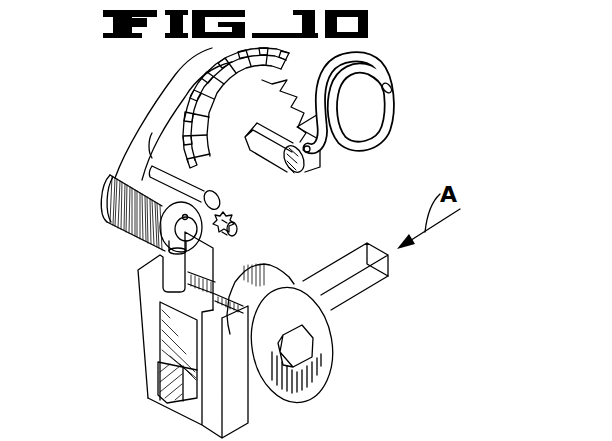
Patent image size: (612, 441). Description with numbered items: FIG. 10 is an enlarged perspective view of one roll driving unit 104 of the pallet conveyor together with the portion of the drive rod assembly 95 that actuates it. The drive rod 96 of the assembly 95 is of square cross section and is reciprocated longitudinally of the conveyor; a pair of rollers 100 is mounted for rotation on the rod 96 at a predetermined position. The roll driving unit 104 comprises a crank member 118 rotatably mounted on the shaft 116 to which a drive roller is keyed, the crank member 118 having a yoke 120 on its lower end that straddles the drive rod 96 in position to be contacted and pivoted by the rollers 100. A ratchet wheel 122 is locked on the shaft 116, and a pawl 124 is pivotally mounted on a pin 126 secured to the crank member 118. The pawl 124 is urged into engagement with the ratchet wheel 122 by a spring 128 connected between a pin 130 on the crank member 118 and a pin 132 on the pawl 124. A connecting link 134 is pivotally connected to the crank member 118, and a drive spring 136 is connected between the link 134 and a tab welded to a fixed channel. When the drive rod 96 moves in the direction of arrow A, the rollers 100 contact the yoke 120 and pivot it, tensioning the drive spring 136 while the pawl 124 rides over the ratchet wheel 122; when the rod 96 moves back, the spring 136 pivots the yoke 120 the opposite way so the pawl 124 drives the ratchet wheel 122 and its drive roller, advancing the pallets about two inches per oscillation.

The drive rod assembly 95 is at (391, 267).
The drive rod 96 is at (162, 378).
The rollers 100 is at (297, 270).
The roll driving unit 104 is at (160, 106).
The shaft 116 is at (305, 152).
The crank member 118 is at (150, 147).
The yoke 120 is at (142, 288).
The ratchet wheel 122 is at (278, 80).
The pawl 124 is at (176, 244).
The pin 126 is at (170, 254).
The spring 128 is at (234, 221).
The pin 130 is at (150, 169).
The pin 132 is at (238, 229).
The connecting link 134 is at (282, 162).
The drive spring 136 is at (392, 137).